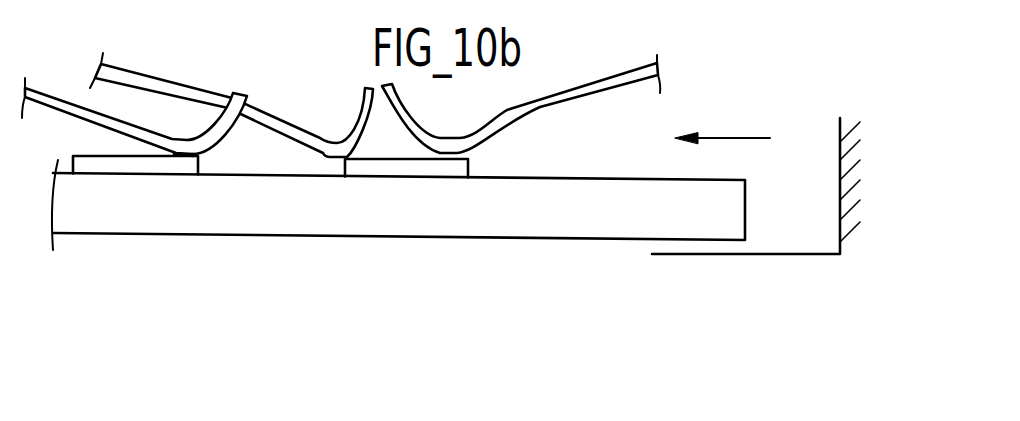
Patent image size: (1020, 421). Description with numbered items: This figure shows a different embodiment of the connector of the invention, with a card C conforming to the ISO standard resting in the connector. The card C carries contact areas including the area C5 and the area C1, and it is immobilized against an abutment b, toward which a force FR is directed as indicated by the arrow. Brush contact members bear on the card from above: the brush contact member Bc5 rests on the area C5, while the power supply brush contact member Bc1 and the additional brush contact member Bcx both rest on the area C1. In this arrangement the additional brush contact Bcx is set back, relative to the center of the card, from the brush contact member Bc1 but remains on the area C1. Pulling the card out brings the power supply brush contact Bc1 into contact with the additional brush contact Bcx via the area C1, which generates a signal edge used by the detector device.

The brush contact member Bc5 is at (58, 97).
The additional brush contact member Bcx is at (286, 112).
The power supply brush contact member Bc1 is at (600, 79).
The area of the card C5 is at (141, 176).
The card C is at (340, 218).
The area of the card C1 is at (443, 170).
The abutment b is at (851, 224).
The force FR is at (722, 126).